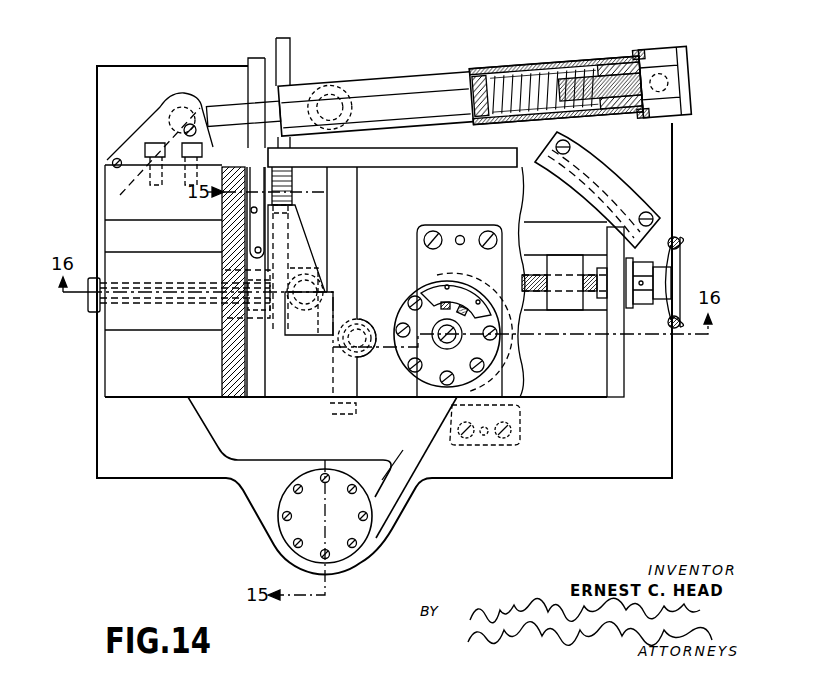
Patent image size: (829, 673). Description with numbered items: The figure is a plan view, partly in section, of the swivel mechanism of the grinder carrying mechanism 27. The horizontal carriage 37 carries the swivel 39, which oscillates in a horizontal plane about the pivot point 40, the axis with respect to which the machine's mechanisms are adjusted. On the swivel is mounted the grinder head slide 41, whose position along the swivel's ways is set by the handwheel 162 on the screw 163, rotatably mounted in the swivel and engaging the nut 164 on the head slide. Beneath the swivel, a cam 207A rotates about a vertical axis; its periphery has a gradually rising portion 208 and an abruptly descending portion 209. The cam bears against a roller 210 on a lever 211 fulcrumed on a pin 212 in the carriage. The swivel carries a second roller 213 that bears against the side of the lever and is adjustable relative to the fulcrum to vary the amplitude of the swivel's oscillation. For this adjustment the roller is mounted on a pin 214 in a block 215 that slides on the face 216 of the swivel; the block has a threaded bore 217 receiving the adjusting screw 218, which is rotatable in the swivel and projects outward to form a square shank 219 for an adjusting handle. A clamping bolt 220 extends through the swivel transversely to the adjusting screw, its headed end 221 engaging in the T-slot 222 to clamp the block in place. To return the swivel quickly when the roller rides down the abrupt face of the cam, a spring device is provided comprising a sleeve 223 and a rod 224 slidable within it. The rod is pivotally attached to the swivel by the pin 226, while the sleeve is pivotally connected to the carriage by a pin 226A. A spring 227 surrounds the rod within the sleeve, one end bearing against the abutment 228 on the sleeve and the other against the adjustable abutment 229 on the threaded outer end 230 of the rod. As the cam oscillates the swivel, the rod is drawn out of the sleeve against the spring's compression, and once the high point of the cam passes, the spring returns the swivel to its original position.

The grinder carrying mechanism 27 is at (80, 170).
The horizontal carriage 37 is at (655, 170).
The swivel 39 is at (412, 440).
The pivot point 40 is at (325, 516).
The grinder head slide 41 is at (615, 385).
The handwheel 162 is at (682, 243).
The screw 163 is at (537, 282).
The nut 164 is at (572, 268).
The cam 207A is at (372, 398).
The gradually rising portion 208 is at (428, 388).
The abruptly descending portion 209 is at (440, 331).
The roller 210 is at (363, 326).
The lever 211 is at (345, 238).
The pin 212 is at (338, 96).
The roller 213 is at (326, 278).
The pin 214 is at (303, 335).
The block 215 is at (297, 232).
The face 216 is at (258, 325).
The threaded bore 217 is at (236, 346).
The adjusting screw 218 is at (330, 190).
The square shank 219 is at (291, 52).
The clamping bolt 220 is at (150, 300).
The headed end 221 is at (225, 283).
The T-slot 222 is at (230, 268).
The sleeve 223 is at (418, 92).
The rod 224 is at (500, 96).
The pin 226 is at (172, 108).
The pin 226A is at (672, 86).
The spring 227 is at (498, 84).
The abutment 228 is at (287, 100).
The adjustable abutment 229 is at (588, 76).
The threaded outer end 230 is at (645, 66).